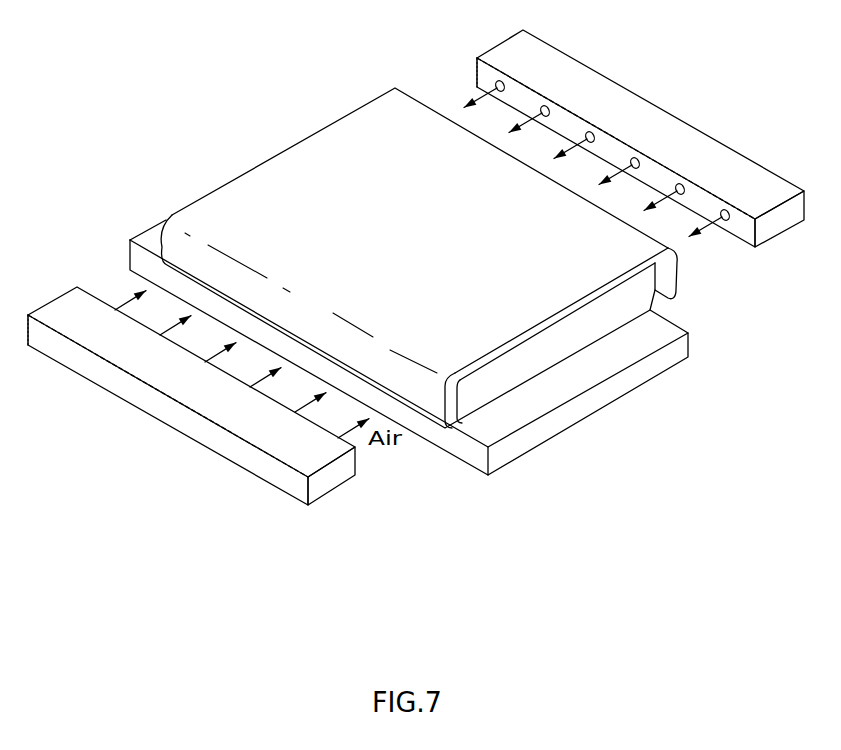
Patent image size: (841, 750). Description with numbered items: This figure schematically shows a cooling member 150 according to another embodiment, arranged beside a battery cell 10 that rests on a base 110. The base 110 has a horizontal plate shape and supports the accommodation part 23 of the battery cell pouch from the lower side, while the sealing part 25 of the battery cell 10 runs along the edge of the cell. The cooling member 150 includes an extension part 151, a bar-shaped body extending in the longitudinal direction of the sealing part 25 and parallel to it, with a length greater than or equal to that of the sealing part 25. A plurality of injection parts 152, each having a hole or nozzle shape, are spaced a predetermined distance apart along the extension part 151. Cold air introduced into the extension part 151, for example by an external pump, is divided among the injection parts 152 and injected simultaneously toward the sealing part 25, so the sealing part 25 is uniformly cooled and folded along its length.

The battery cell 10 is at (419, 296).
The accommodation part 23 is at (513, 375).
The sealing part 25 is at (427, 395).
The base 110 is at (593, 402).
The cooling member 150 is at (634, 162).
The extension part 151 is at (738, 162).
The injection part 152 is at (727, 226).